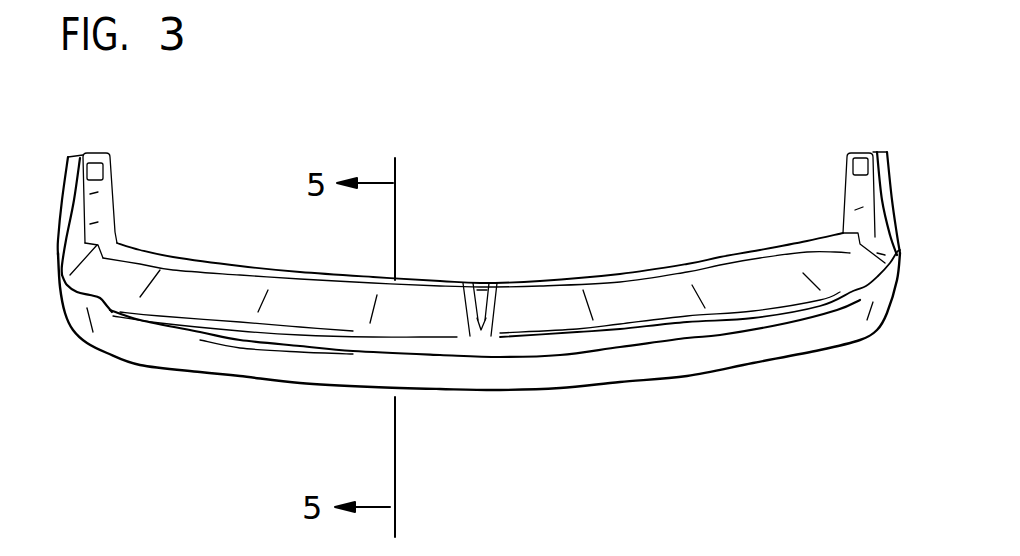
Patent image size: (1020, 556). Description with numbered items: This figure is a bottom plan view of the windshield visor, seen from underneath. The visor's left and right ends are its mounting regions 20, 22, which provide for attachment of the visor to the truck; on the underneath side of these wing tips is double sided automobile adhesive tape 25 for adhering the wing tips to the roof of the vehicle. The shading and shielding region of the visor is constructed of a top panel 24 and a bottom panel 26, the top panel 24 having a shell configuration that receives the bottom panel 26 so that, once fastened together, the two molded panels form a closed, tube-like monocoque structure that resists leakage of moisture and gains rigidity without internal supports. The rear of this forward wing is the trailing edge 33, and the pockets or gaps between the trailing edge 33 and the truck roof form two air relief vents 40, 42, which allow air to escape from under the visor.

The mounting region 20 is at (115, 128).
The mounting region 22 is at (863, 125).
The top panel 24 is at (730, 353).
The double sided automobile adhesive tape 25 is at (100, 170).
The bottom panel 26 is at (660, 300).
The trailing edge 33 is at (425, 280).
The air relief vent 40 is at (267, 246).
The air relief vent 42 is at (586, 228).